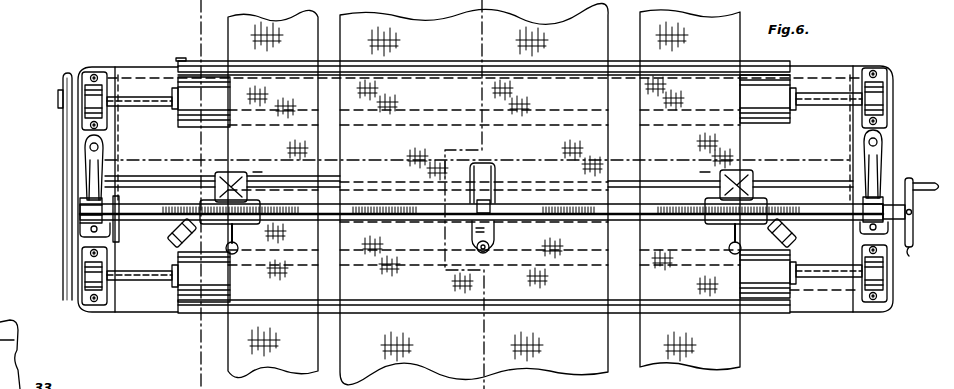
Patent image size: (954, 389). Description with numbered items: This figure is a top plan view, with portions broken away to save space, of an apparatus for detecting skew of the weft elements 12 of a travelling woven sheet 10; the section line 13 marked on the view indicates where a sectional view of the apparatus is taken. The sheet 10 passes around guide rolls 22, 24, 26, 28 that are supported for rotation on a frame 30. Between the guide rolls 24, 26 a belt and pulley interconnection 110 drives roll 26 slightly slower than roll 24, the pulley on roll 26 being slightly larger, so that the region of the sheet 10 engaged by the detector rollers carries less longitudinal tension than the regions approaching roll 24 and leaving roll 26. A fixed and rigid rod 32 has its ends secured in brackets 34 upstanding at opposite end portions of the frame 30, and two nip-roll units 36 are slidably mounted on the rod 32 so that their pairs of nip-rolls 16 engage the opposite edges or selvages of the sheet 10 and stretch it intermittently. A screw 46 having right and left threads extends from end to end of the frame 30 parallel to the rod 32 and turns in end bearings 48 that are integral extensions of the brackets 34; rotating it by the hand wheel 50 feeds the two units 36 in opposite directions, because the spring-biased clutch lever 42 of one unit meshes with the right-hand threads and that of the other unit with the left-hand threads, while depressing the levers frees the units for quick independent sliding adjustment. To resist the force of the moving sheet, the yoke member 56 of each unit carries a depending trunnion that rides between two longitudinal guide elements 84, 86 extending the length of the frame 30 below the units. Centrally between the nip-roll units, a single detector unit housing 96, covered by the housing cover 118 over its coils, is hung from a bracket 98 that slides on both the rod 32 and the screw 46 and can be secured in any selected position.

The sheet 10 is at (596, 344).
The weft elements 12 is at (210, 13).
The section line 13- 13 is at (498, 6).
The nip-rolls 16 is at (481, 173).
The guide roll 22 is at (210, 316).
The guide roll 24 is at (186, 288).
The guide roll 26 is at (176, 80).
The guide roll 28 is at (183, 62).
The frame 30 is at (105, 316).
The rod 32 is at (348, 204).
The brackets 34 is at (88, 190).
The nip-roll unit 36 is at (238, 170).
The clutch lever 42 is at (238, 243).
The screw 46 is at (135, 214).
The end bearings 48 is at (80, 218).
The hand wheel 50 is at (911, 224).
The yoke member 56 is at (176, 233).
The guide element 84 is at (163, 195).
The guide element 86 is at (145, 168).
The unit housing 96 is at (498, 166).
The bracket 98 is at (497, 233).
The belt and pulley interconnection 110 is at (62, 148).
The cover 118 is at (493, 198).